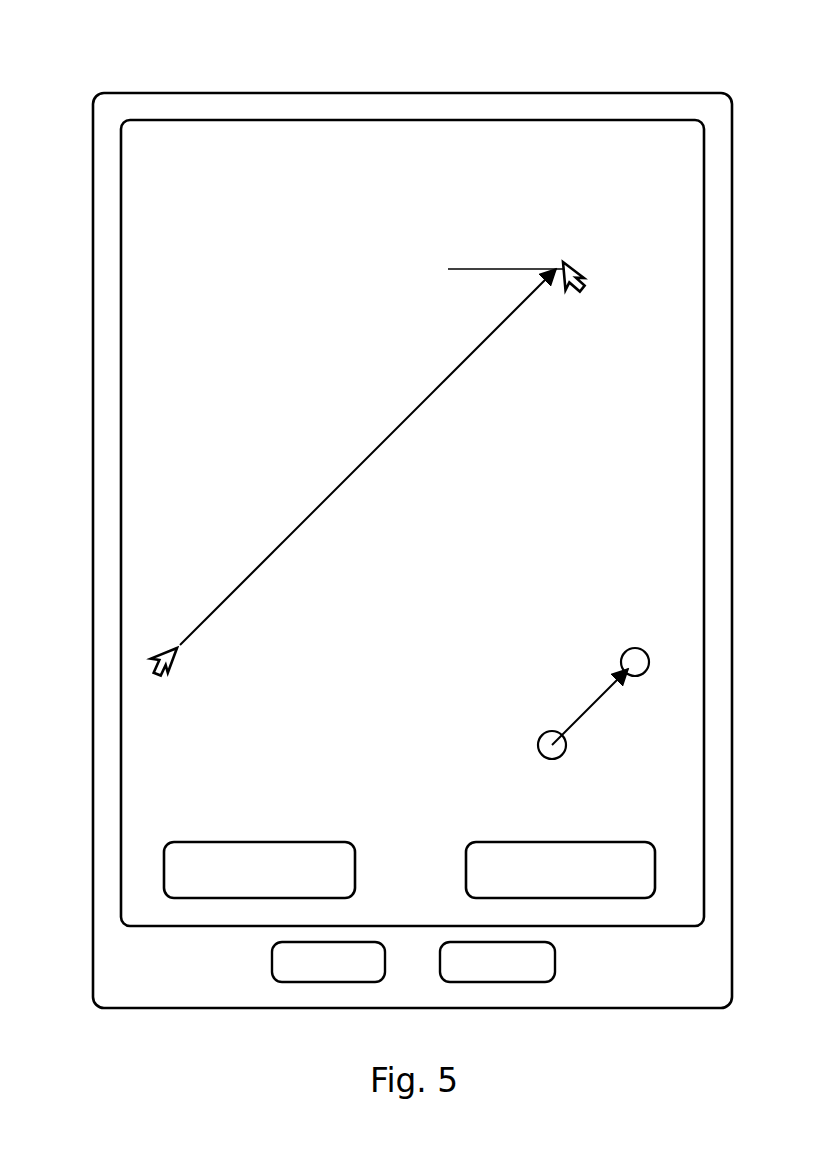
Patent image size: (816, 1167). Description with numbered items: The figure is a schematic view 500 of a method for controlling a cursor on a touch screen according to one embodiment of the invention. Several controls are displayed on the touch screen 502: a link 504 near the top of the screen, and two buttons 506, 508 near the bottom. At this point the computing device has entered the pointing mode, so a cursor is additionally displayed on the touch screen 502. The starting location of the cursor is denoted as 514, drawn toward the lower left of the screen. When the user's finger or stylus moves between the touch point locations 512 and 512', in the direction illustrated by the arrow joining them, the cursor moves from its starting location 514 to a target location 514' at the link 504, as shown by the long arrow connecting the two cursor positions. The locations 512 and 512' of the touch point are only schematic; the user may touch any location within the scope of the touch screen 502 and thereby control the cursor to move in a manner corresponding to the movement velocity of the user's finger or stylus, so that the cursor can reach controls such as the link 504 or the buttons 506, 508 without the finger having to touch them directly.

The schematic view 500 is at (244, 44).
The touch screen 502 is at (112, 166).
The link 504 is at (332, 226).
The button 506 is at (173, 814).
The button 508 is at (476, 814).
The touch point location 512 is at (583, 728).
The touch point location 512' is at (650, 676).
The starting location of the cursor 514 is at (350, 489).
The target location of the cursor 514' is at (572, 292).